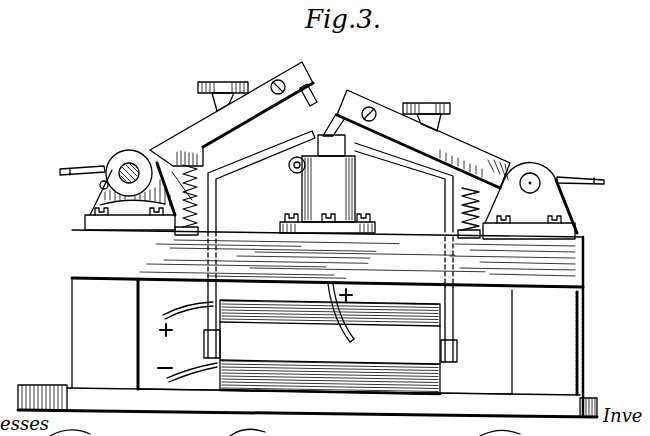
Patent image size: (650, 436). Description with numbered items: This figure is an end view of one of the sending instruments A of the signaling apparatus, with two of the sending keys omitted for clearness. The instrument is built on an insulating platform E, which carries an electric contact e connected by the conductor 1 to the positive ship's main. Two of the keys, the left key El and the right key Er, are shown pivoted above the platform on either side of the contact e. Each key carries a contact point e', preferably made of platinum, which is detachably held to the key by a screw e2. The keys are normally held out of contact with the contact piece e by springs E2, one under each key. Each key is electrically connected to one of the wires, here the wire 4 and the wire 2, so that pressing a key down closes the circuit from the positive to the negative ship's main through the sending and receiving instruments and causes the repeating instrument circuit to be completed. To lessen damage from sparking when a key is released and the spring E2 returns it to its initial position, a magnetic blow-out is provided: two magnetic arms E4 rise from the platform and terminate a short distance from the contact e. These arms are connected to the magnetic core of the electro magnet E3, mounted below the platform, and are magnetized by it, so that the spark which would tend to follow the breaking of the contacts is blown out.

The sending instrument A is at (315, 327).
The insulating platform E is at (327, 258).
The electro magnet E3 is at (328, 362).
The conductor 1 is at (336, 314).
The spring E2 is at (148, 156).
The key El is at (183, 129).
The screw on left lever el is at (279, 80).
The key Er is at (455, 141).
The screw e2 is at (376, 110).
The contact point e' is at (334, 103).
The electric contact e is at (327, 184).
The magnetic arm E4 is at (268, 155).
The wire 4 is at (84, 168).
The wire 2 is at (583, 186).